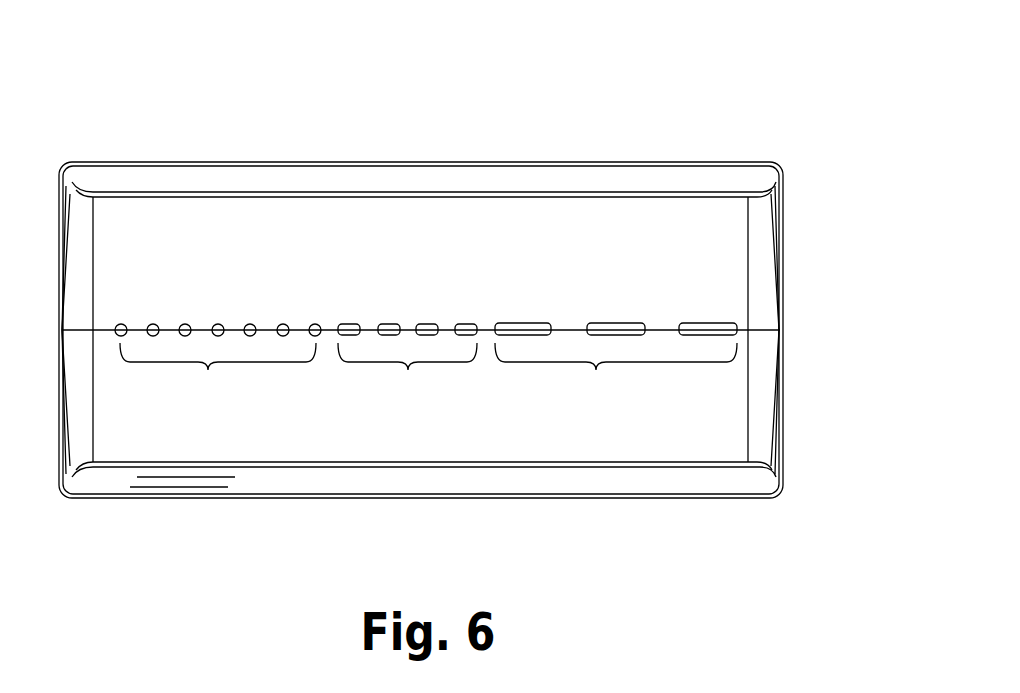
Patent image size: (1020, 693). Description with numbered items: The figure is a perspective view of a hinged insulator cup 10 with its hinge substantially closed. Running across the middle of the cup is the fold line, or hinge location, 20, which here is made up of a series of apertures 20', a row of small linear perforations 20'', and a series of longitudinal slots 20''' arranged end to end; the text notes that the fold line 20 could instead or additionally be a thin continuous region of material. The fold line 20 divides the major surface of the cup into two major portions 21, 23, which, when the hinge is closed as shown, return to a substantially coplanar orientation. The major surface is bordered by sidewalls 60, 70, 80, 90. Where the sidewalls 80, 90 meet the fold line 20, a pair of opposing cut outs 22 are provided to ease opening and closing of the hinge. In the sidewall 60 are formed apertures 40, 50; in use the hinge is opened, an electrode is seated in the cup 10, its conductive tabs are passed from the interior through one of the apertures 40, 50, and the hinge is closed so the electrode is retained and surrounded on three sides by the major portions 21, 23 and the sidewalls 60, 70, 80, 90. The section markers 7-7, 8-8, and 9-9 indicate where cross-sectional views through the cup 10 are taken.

The hinged insulator cup 10 is at (704, 88).
The fold line 20 is at (218, 233).
The apertures 20' is at (218, 371).
The small linear perforations 20'' is at (407, 362).
The longitudinal slots 20''' is at (616, 361).
The major portion 21 is at (650, 271).
The cut outs 22 is at (62, 330).
The major portion 23 is at (650, 435).
The aperture 40 is at (160, 487).
The aperture 50 is at (225, 478).
The sidewall 60 is at (620, 484).
The sidewall 70 is at (460, 176).
The sidewall 80 is at (758, 426).
The sidewall 90 is at (80, 436).
The section line 7-7 is at (60, 140).
The section line 8-8 is at (60, 528).
The section line 9-9 is at (828, 175).